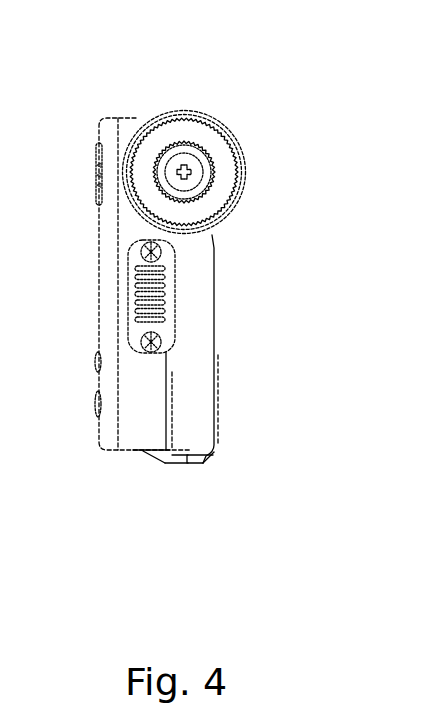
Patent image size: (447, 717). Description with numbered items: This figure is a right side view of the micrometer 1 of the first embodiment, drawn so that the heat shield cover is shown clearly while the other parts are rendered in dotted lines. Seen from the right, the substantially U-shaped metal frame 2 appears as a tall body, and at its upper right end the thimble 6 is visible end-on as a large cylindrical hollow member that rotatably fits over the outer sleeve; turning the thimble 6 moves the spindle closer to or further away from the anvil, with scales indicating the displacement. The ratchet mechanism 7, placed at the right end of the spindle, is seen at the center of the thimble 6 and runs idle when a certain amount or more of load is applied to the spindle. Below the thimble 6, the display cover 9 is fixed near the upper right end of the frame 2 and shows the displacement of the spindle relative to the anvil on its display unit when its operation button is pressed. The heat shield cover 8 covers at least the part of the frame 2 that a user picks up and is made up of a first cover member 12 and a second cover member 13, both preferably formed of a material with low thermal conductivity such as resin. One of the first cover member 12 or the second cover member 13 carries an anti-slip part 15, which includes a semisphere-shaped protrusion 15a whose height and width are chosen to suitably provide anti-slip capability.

The micrometer 1 is at (398, 57).
The frame 2 is at (198, 363).
The thimble 6 is at (218, 115).
The ratchet mechanism 7 is at (262, 167).
The heat shield cover 8 is at (141, 474).
The display cover 9 is at (110, 293).
The first cover member 12 is at (168, 462).
The second cover member 13 is at (200, 462).
The anti-slip part 15 is at (241, 467).
The protrusion 15a is at (213, 432).